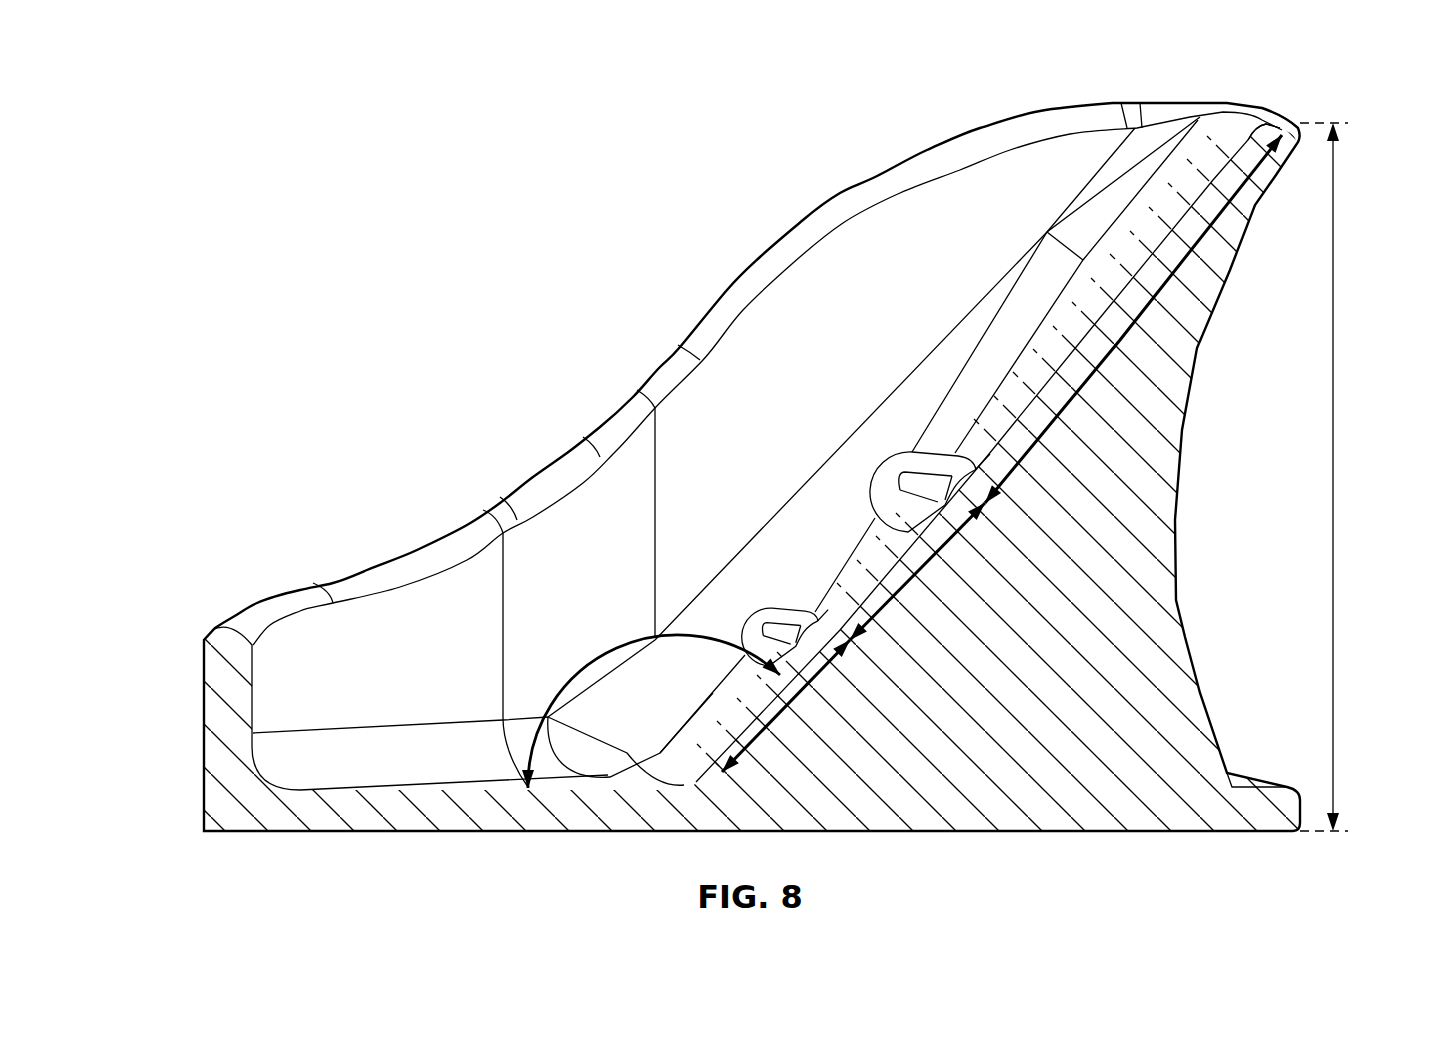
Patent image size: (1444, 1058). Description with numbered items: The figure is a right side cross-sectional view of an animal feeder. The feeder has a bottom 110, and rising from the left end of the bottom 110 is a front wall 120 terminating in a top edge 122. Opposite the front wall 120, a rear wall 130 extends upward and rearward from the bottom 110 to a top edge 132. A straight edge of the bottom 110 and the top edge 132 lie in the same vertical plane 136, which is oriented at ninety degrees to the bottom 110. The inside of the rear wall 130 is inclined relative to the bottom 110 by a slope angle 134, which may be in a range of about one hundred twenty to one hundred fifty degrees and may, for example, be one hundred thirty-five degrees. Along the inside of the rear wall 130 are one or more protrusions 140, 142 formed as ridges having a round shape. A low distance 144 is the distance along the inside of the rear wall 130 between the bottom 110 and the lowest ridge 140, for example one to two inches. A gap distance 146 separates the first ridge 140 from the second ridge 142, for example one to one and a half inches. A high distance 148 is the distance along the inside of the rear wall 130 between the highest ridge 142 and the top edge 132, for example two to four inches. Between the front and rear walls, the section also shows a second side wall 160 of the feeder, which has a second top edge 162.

The bottom 110 is at (430, 782).
The front wall 120 is at (204, 700).
The top edge 122 is at (272, 615).
The rear wall 130 is at (1200, 140).
The top edge 132 is at (1258, 108).
The slope angle 134 is at (612, 652).
The vertical plane 136 is at (1345, 440).
The protrusion 140 is at (790, 620).
The protrusion 142 is at (898, 482).
The low distance 144 is at (800, 707).
The gap distance 146 is at (923, 577).
The high distance 148 is at (1027, 453).
The second side wall 160 is at (903, 230).
The second top edge 162 is at (1033, 128).